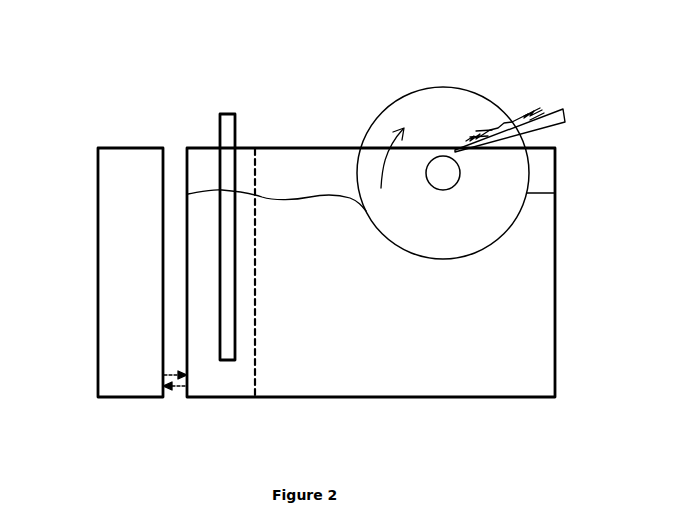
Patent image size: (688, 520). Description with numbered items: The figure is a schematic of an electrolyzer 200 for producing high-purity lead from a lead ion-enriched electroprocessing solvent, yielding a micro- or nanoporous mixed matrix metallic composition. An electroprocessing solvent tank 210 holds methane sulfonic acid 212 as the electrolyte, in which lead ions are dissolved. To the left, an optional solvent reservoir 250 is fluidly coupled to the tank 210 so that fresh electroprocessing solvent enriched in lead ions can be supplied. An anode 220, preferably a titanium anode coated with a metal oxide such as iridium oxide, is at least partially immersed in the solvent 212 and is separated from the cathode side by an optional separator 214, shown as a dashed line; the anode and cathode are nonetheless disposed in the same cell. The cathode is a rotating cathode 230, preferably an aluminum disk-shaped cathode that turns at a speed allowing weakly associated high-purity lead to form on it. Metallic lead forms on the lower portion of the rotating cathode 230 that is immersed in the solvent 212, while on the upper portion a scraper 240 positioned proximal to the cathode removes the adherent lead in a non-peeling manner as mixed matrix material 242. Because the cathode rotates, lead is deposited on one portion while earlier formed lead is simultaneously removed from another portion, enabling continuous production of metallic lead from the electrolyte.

The electrolyzer 200 is at (151, 107).
The electroprocessing solvent tank 210 is at (556, 287).
The methane sulfonic acid 212 is at (544, 223).
The separator 214 is at (255, 338).
The anode 220 is at (234, 112).
The rotating cathode 230 is at (451, 93).
The scraper 240 is at (568, 111).
The mixed matrix material 242 is at (511, 118).
The solvent reservoir 250 is at (98, 281).